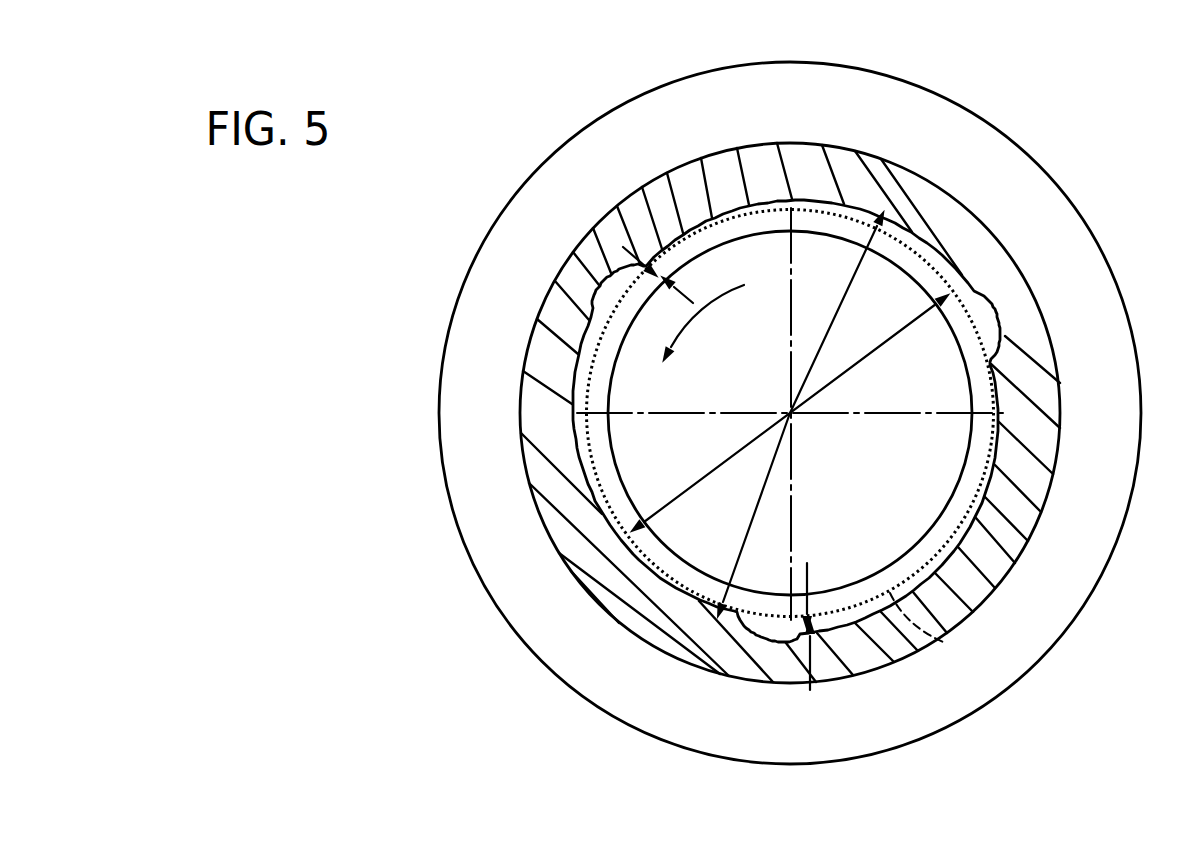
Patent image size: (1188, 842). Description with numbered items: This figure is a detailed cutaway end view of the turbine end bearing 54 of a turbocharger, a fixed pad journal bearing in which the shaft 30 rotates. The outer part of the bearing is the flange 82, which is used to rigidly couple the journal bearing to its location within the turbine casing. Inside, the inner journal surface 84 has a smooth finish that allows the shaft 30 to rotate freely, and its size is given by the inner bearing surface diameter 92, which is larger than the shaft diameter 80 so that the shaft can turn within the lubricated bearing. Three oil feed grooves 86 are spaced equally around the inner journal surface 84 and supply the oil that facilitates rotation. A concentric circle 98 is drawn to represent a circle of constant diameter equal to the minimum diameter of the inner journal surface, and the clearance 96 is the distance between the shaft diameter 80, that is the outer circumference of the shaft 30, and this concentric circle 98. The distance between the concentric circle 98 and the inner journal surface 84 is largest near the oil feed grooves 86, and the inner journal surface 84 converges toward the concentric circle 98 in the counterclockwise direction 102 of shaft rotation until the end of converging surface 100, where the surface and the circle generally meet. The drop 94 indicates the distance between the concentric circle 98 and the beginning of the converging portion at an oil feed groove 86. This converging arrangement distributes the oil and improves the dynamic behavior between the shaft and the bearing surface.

The turbine end bearing 54 is at (1133, 160).
The flange 82 is at (548, 633).
The inner journal surface 84 is at (772, 424).
The end of converging surface 100 is at (633, 207).
The clearance 96 is at (620, 312).
The oil feed groove 86 is at (618, 272).
The shaft 30 is at (848, 413).
The shaft diameter 80 is at (856, 370).
The inner bearing surface diameter 92 is at (863, 272).
The drop 94 is at (812, 680).
The concentric circle 98 is at (943, 642).
The counterclockwise direction 102 is at (707, 339).